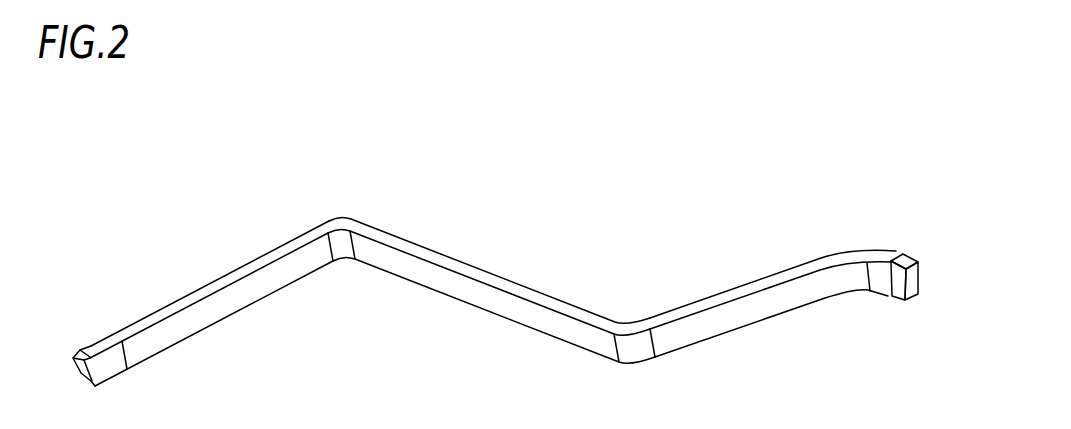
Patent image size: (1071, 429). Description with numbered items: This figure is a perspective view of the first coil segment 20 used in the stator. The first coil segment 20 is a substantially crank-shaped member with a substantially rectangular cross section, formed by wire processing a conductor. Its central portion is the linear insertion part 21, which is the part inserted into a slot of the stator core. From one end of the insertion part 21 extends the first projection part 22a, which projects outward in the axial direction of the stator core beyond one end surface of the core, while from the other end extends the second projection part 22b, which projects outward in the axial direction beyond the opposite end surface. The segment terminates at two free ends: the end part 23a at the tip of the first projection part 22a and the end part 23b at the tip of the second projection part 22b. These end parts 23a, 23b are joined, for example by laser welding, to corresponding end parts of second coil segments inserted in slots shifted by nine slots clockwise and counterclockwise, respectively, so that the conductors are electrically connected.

The first coil segment 20 is at (487, 168).
The insertion part 21 is at (518, 292).
The first projection part 22a is at (763, 310).
The second projection part 22b is at (213, 310).
The end part 23a is at (911, 253).
The end part 23b is at (80, 352).